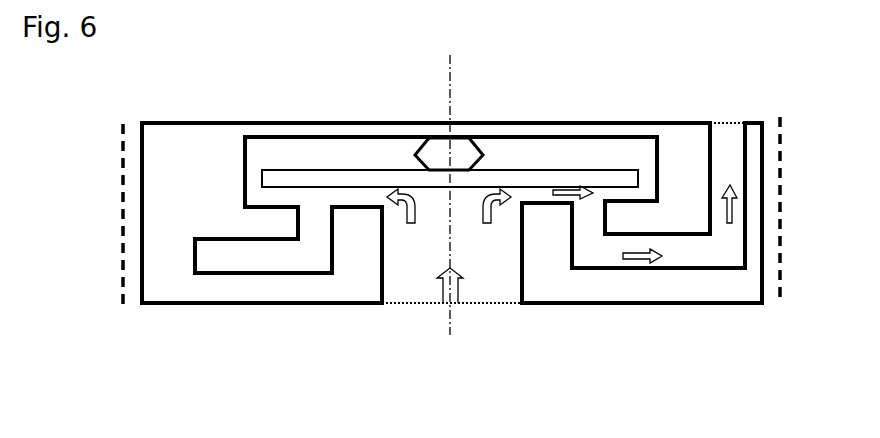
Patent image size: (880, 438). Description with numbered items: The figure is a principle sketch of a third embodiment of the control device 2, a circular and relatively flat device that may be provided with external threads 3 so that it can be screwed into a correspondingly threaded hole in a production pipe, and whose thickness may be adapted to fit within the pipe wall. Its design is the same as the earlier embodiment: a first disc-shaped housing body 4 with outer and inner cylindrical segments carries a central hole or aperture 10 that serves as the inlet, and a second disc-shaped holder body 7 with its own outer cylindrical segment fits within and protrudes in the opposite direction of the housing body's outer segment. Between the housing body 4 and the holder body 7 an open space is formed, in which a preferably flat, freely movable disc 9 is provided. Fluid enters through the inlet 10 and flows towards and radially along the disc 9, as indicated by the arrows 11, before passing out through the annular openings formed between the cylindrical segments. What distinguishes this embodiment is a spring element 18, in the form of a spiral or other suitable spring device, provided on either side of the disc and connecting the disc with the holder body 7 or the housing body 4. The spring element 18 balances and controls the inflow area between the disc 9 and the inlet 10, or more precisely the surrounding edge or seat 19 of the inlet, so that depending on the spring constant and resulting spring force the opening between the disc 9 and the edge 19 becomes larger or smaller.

The control device 2 is at (426, 236).
The external threads 3 is at (778, 127).
The first disc-shaped housing body 4 is at (572, 245).
The second disc-shaped holder body 7 is at (310, 122).
The disc 9 is at (362, 182).
The central hole or aperture 10 is at (416, 237).
The arrows 11 is at (453, 305).
The spring element 18 is at (468, 154).
The edge or seat 19 is at (530, 205).